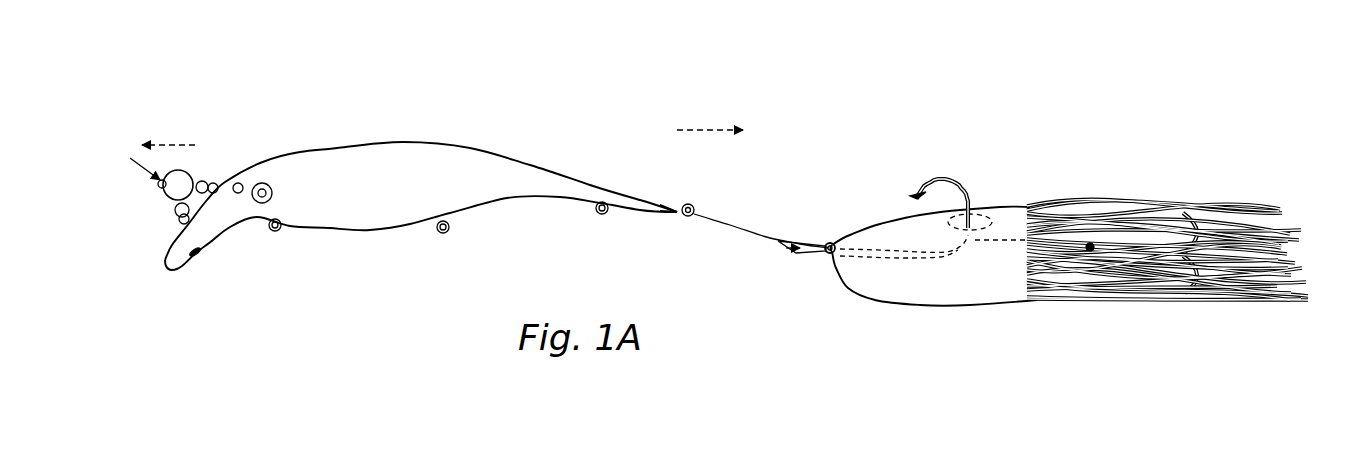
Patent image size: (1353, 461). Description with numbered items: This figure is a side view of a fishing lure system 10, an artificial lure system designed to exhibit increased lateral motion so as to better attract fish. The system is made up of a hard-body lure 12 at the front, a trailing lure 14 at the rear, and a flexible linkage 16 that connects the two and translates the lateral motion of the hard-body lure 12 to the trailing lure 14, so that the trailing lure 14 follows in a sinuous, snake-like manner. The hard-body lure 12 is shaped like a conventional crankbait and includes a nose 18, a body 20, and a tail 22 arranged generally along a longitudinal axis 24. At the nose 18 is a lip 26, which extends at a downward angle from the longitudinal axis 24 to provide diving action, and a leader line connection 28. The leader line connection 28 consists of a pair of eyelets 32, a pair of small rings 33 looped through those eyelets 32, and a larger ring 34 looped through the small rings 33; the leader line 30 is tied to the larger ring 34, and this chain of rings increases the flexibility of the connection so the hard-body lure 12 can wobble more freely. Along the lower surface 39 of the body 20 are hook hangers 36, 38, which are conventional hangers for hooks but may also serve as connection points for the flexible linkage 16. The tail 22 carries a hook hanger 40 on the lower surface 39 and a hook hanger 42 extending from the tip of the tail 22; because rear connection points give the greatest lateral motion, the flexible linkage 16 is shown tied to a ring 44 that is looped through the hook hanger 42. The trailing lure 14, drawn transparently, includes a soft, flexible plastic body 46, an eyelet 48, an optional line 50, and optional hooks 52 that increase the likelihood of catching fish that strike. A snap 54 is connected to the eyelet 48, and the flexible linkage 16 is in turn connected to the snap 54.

The fishing lure system 10 is at (905, 137).
The hard-body lure 12 is at (532, 140).
The trailing lure 14 is at (997, 135).
The flexible linkage 16 is at (728, 295).
The nose 18 is at (219, 253).
The body 20 is at (393, 135).
The tail 22 is at (609, 152).
The longitudinal axis 24 is at (186, 143).
The lip 26 is at (180, 262).
The leader line connection 28 is at (207, 108).
The leader line 30 is at (130, 161).
The eyelets 32 is at (217, 184).
The small rings 33 is at (202, 181).
The larger ring 34 is at (163, 190).
The hook hanger 36 is at (278, 232).
The hook hanger 38 is at (444, 234).
The lower surface 39 is at (361, 243).
The hook hanger 40 is at (606, 216).
The hook hanger 42 is at (678, 214).
The ring 44 is at (692, 204).
The body 46 is at (878, 280).
The eyelet 48 is at (830, 241).
The line 50 is at (935, 258).
The hooks 52 is at (945, 183).
The snap 54 is at (800, 258).